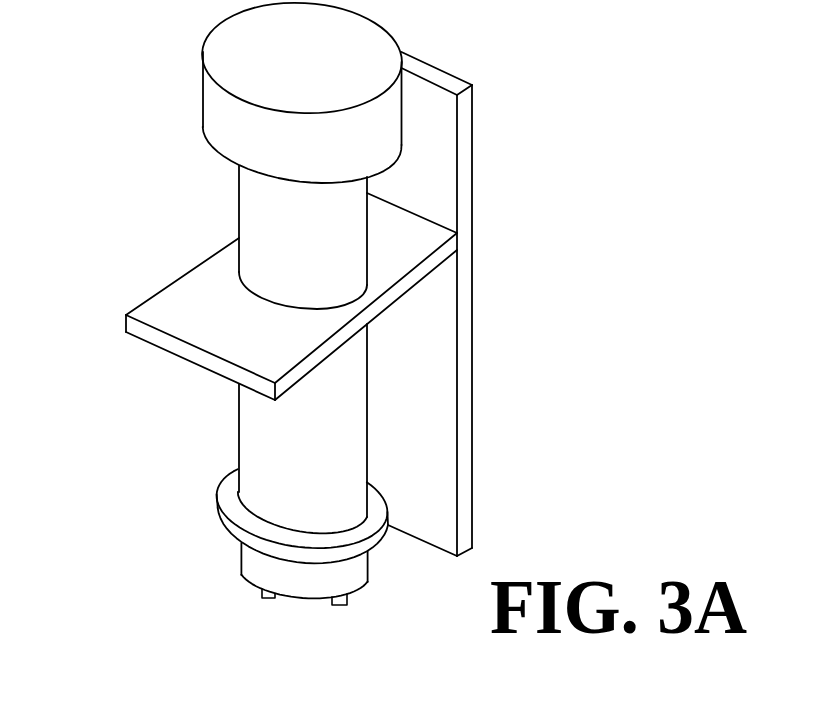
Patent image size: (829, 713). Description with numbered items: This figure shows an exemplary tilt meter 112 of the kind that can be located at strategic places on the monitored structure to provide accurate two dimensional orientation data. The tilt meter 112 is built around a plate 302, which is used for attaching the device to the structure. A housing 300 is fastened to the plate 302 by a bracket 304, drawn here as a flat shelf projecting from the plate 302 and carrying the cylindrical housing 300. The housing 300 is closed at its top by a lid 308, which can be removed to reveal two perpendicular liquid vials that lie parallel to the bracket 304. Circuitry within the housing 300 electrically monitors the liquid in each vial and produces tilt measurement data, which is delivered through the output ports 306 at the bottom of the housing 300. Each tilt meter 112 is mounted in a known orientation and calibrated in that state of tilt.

The tilt meter 112 is at (626, 38).
The housing 300 is at (255, 204).
The plate 302 is at (465, 233).
The bracket 304 is at (148, 336).
The output ports 306 is at (343, 606).
The lid 308 is at (233, 37).